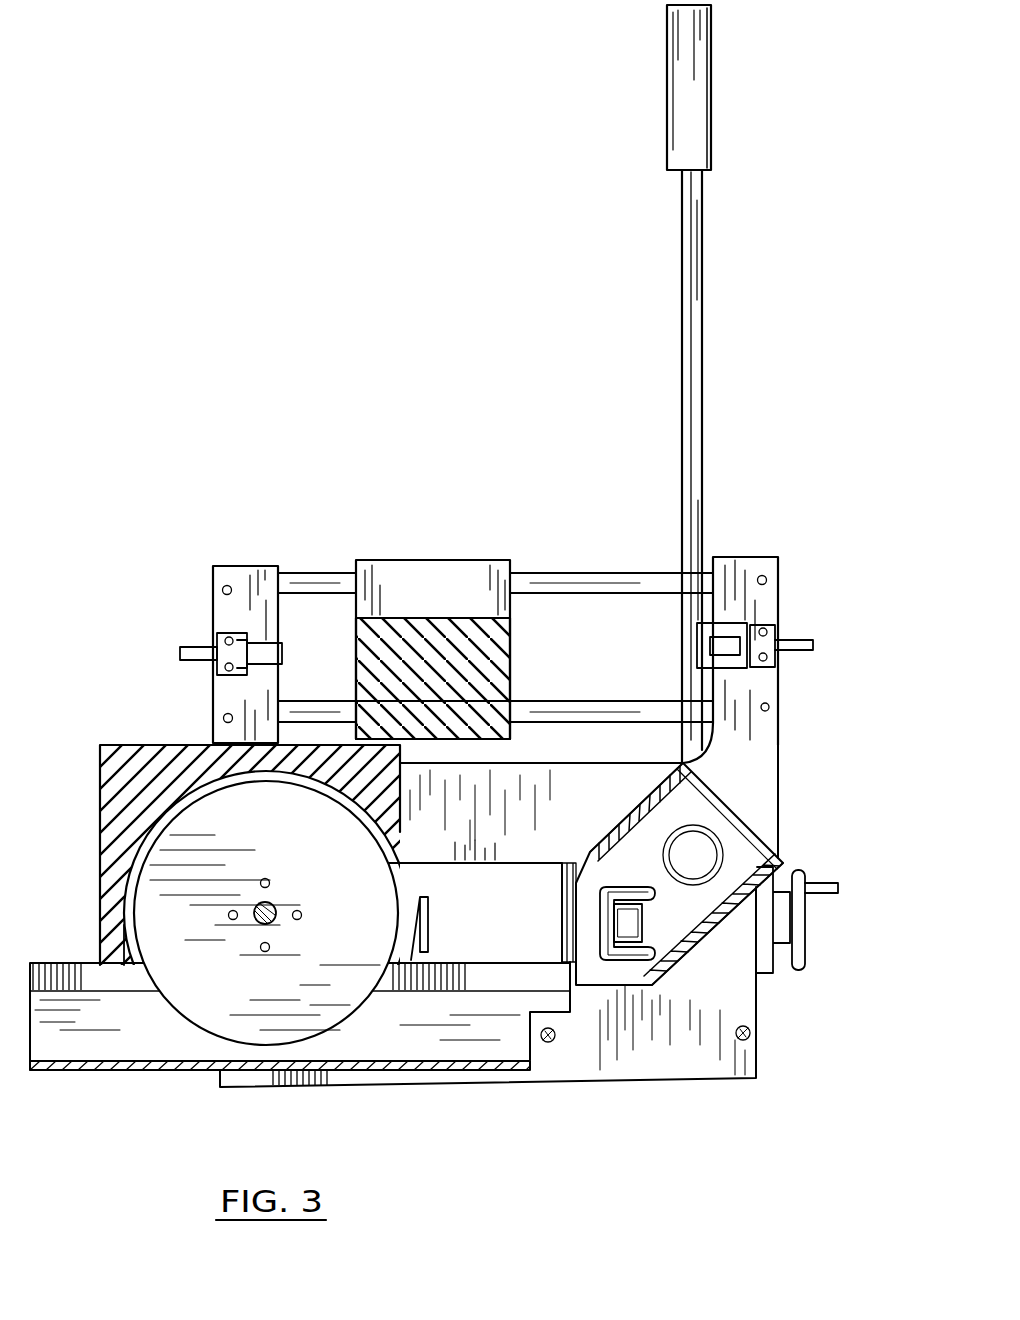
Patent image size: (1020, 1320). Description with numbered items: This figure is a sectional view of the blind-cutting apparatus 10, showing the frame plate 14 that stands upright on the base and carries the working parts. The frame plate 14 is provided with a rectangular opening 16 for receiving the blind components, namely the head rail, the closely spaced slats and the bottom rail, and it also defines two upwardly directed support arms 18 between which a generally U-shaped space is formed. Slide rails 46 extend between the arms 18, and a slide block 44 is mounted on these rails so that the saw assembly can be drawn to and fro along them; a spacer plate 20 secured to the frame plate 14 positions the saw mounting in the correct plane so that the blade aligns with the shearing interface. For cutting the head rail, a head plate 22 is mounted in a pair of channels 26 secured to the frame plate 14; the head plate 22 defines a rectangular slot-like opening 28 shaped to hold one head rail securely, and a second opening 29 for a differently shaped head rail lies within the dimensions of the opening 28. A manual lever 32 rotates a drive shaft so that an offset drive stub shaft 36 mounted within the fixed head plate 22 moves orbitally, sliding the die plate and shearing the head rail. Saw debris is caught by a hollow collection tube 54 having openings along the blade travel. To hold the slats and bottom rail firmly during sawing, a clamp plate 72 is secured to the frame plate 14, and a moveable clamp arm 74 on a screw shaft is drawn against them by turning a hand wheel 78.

The apparatus 10 is at (373, 528).
The frame plate 14 is at (757, 731).
The rectangular opening 16 is at (478, 925).
The support arms 18 is at (237, 575).
The spacer plate 20 is at (148, 745).
The head plate 22 is at (690, 798).
The channels 26 is at (615, 822).
The rectangular slot like opening 28 is at (600, 962).
The second opening 29 is at (652, 920).
The manual lever 32 is at (680, 233).
The offset drive stub shaft 36 is at (720, 830).
The slide block 44 is at (440, 558).
The slide rails 46 is at (597, 573).
The hollow collection tube 54 is at (85, 1072).
The clamp plate 72 is at (560, 931).
The moveable clamp arm 74 is at (432, 907).
The hand wheel 78 is at (806, 950).